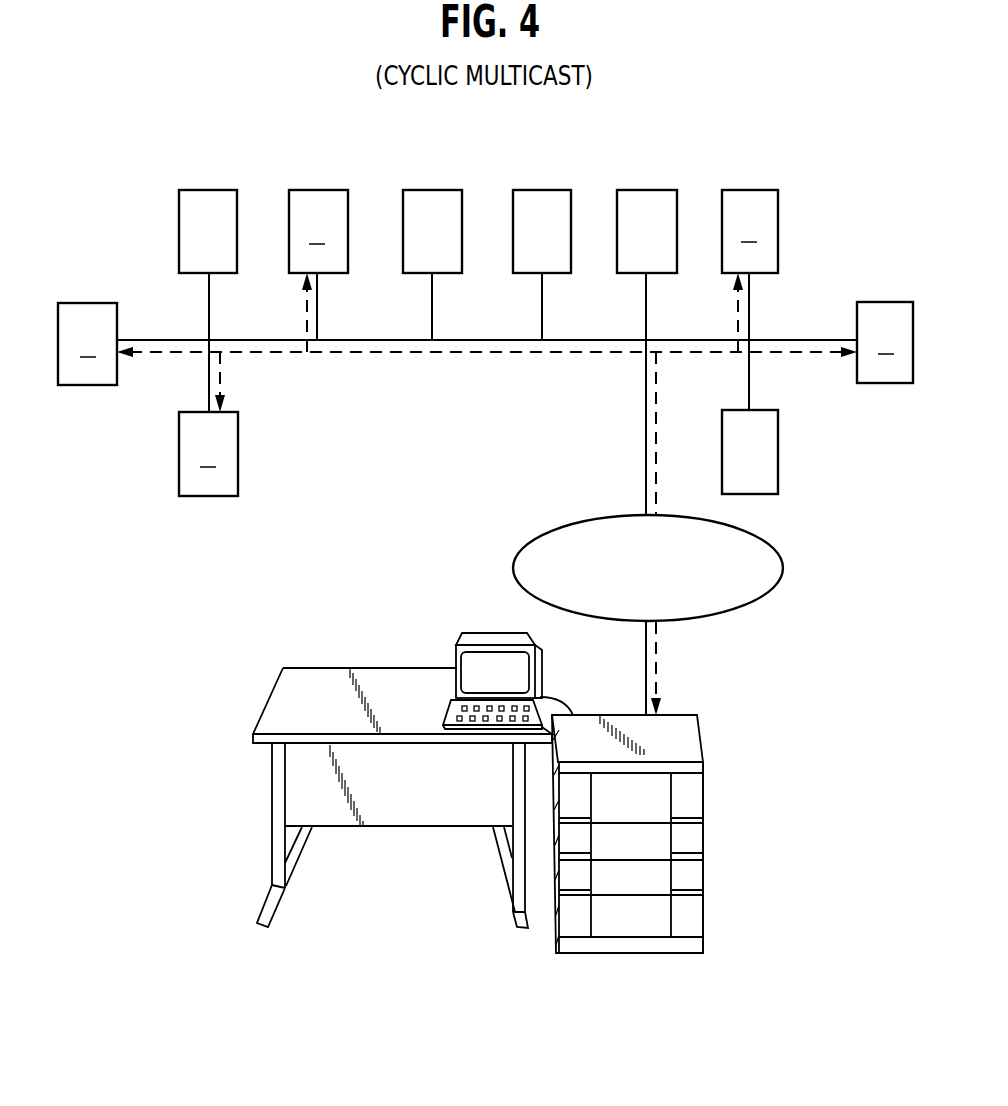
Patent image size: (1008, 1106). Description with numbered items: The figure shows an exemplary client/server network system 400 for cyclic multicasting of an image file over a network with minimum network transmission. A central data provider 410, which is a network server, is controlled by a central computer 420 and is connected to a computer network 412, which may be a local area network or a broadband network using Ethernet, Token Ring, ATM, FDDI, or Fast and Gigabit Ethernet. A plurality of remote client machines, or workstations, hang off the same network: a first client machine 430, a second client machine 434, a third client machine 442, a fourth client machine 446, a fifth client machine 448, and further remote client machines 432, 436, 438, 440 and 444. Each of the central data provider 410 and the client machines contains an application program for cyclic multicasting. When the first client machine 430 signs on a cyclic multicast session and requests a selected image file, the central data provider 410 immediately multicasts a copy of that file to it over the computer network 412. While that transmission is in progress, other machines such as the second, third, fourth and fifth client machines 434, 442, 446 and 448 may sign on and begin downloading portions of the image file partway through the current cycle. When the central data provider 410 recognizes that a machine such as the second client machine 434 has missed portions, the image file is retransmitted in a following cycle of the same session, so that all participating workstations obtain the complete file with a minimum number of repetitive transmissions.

The client/server network system 400 is at (194, 735).
The central data provider 410 is at (704, 929).
The computer network 412 is at (725, 611).
The central computer 420 is at (482, 633).
The first client machine 430 is at (903, 302).
The remote client machine 432 is at (779, 437).
The second client machine 434 is at (769, 190).
The remote client machine 436 is at (664, 190).
The remote client machine 438 is at (560, 190).
The remote client machine 440 is at (450, 190).
The third client machine 442 is at (337, 190).
The remote client machine 444 is at (227, 190).
The fourth client machine 446 is at (106, 303).
The fifth client machine 448 is at (238, 440).